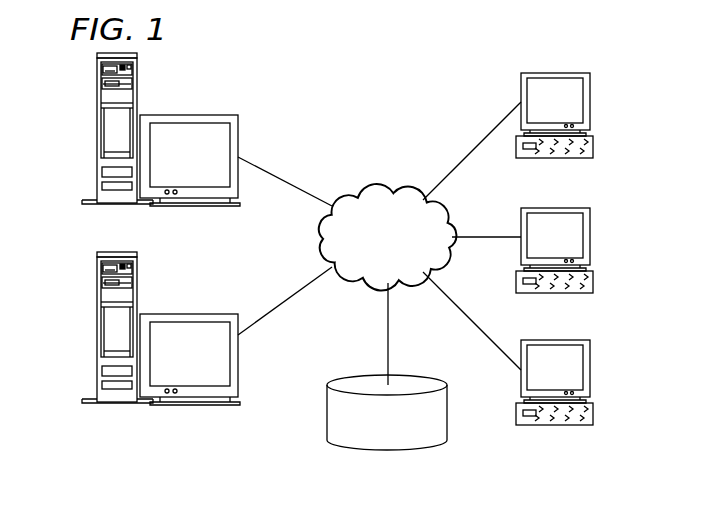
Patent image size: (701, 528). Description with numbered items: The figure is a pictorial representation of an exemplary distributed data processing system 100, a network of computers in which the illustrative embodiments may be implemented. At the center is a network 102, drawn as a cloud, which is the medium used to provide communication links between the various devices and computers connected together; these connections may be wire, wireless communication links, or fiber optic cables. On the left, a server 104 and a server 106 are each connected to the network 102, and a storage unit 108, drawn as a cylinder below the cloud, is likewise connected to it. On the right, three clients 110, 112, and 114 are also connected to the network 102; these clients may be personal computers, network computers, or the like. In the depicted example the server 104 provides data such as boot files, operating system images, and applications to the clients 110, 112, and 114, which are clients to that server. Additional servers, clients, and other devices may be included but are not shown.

The distributed data processing system 100 is at (440, 78).
The network 102 is at (360, 188).
The server 104 is at (97, 128).
The server 106 is at (97, 327).
The storage unit 108 is at (368, 452).
The client 110 is at (590, 101).
The client 112 is at (590, 236).
The client 114 is at (590, 368).